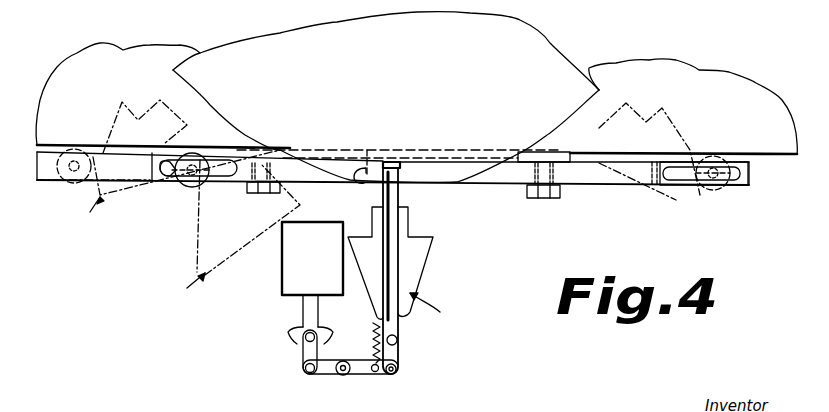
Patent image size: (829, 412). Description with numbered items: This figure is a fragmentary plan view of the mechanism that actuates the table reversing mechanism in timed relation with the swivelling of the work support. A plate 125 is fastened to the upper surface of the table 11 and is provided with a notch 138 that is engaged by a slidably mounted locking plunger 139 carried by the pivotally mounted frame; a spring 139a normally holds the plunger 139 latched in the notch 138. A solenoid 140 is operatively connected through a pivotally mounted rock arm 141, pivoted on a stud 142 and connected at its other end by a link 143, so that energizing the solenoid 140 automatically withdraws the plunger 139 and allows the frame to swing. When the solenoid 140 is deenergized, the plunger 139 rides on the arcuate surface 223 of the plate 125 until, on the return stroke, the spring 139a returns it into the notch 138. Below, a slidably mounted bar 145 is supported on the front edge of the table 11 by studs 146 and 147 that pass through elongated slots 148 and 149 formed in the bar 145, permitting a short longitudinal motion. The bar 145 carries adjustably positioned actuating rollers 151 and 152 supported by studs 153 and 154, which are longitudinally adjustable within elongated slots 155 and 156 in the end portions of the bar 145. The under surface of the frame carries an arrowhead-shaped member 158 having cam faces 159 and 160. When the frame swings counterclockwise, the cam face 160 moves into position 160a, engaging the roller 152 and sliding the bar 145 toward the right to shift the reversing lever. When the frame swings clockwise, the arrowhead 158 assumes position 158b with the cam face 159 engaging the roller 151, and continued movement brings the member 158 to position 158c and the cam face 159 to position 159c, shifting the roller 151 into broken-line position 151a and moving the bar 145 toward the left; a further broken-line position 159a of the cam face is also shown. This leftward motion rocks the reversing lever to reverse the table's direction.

The table 11 is at (776, 150).
The plate 125 is at (567, 60).
The notch 138 is at (388, 160).
The locking plunger 139 is at (398, 182).
The spring 139a is at (373, 334).
The solenoid 140 is at (284, 273).
The rock arm 141 is at (322, 375).
The stud 142 is at (346, 376).
The link 143 is at (393, 355).
The bar 145 is at (497, 184).
The stud 146 is at (275, 184).
The stud 147 is at (553, 198).
The elongated slot 148 is at (357, 177).
The elongated slot 149 is at (646, 178).
The actuating roller 151 is at (182, 187).
The broken line position of roller 151a is at (72, 183).
The actuating roller 152 is at (715, 188).
The stud 153 is at (197, 153).
The stud 154 is at (720, 165).
The elongated slot 155 is at (213, 177).
The elongated slot 156 is at (672, 181).
The arrowhead-shaped member 158 is at (442, 311).
The position of arrowhead 158b is at (176, 291).
The position of arrowhead 158c is at (94, 215).
The cam face 159 is at (360, 292).
The blade alternate position 159a is at (196, 235).
The position of cam face 159c is at (108, 136).
The cam face 160 is at (427, 267).
The position of cam face 160a is at (678, 134).
The arcuate surface 223 is at (553, 150).